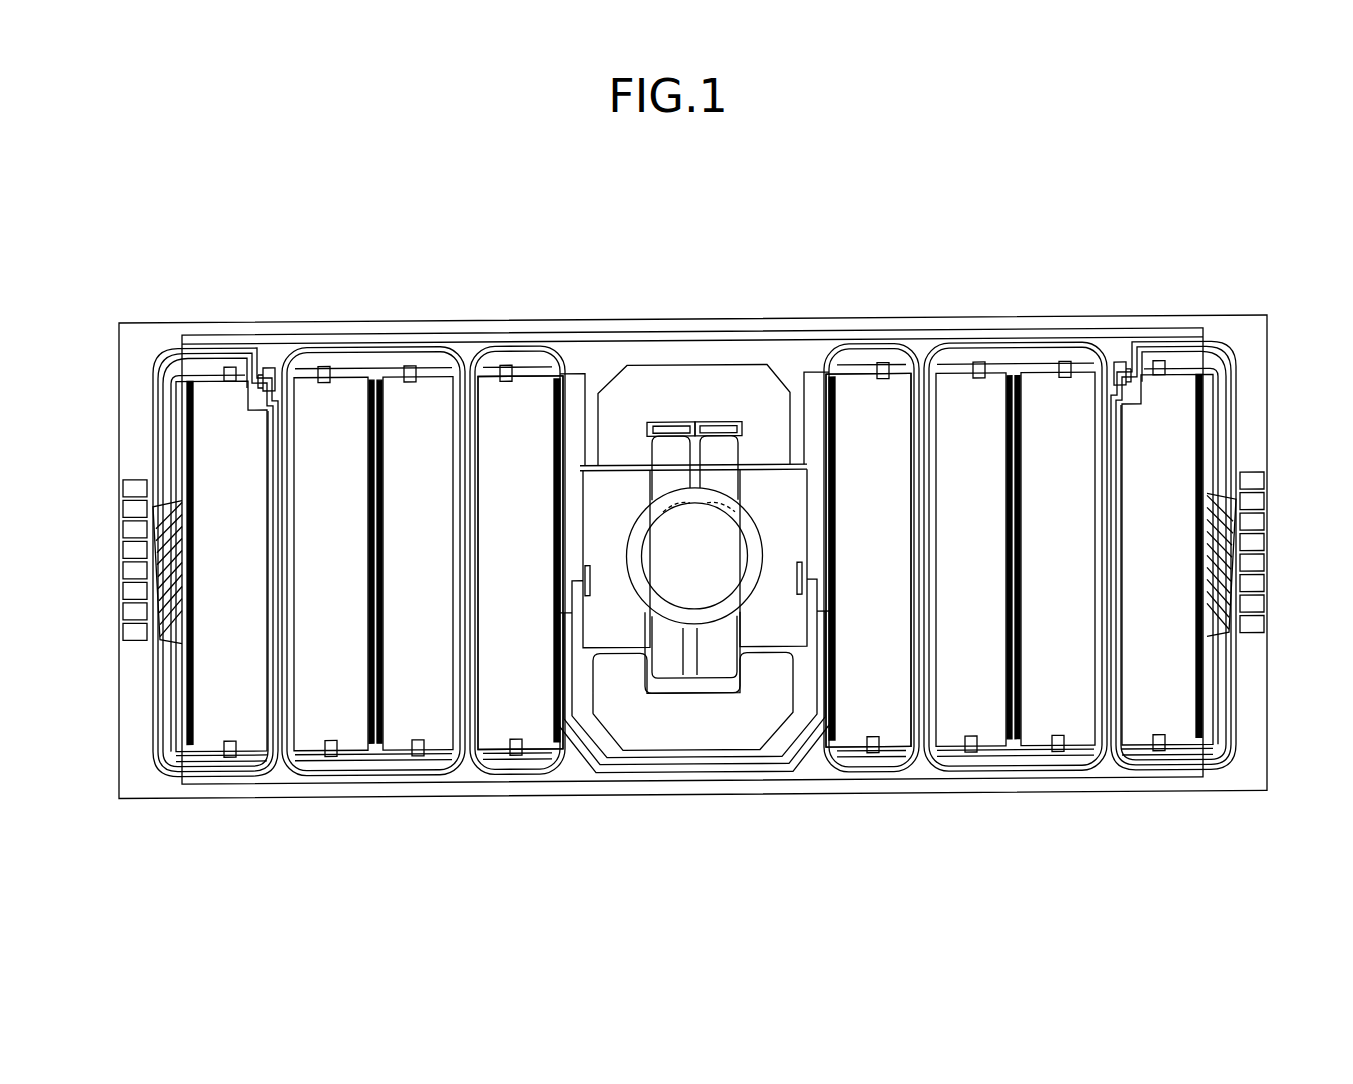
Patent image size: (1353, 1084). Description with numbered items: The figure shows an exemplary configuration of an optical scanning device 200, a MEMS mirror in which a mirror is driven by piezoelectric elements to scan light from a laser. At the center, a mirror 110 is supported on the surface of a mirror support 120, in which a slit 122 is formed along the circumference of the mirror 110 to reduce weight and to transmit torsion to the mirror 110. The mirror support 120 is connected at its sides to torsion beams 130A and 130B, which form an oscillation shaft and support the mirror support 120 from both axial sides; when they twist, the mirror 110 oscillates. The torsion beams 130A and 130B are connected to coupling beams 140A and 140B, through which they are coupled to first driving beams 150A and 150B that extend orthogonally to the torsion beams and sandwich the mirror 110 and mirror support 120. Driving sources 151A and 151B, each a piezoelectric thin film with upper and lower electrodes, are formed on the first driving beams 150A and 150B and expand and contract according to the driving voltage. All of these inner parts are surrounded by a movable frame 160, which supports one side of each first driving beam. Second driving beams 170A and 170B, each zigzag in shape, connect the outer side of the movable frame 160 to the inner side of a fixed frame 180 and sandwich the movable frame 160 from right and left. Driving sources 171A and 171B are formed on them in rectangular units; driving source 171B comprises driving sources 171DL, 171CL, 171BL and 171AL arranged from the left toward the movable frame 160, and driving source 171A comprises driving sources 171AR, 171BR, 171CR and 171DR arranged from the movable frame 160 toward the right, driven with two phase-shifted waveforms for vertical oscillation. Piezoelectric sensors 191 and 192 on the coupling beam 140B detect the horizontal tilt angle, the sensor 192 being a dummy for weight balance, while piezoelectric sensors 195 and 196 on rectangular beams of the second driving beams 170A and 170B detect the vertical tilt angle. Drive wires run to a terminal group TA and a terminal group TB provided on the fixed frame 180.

The optical scanning device 200 is at (1108, 168).
The fixed frame 180 is at (1247, 749).
The movable frame 160 is at (700, 341).
The second driving beam 170A is at (1030, 617).
The second driving beam 170B is at (359, 620).
The driving source 171A is at (880, 713).
The driving source 171B is at (508, 447).
The driving source 171AL is at (492, 730).
The driving source 171BL is at (403, 731).
The driving source 171CL is at (348, 730).
The driving source 171DL is at (257, 730).
The driving source 171AR is at (905, 727).
The driving source 171BR is at (993, 732).
The driving source 171CR is at (1048, 727).
The driving source 171DR is at (1140, 729).
The piezoelectric sensor 196 is at (262, 374).
The piezoelectric sensor 195 is at (1113, 380).
The slit 122 is at (735, 412).
The driving source 151A is at (783, 508).
The driving source 151B is at (613, 498).
The piezoelectric sensor 191 is at (670, 423).
The piezoelectric sensor 192 is at (717, 423).
The torsion beam 130B is at (693, 459).
The torsion beam 130A is at (695, 653).
The mirror 110 is at (700, 583).
The mirror support 120 is at (718, 612).
The first driving beam 150A is at (770, 653).
The first driving beam 150B is at (647, 663).
The coupling beam 140A is at (623, 653).
The coupling beam 140B is at (717, 502).
The terminal group TA is at (1272, 472).
The terminal group TB is at (112, 472).